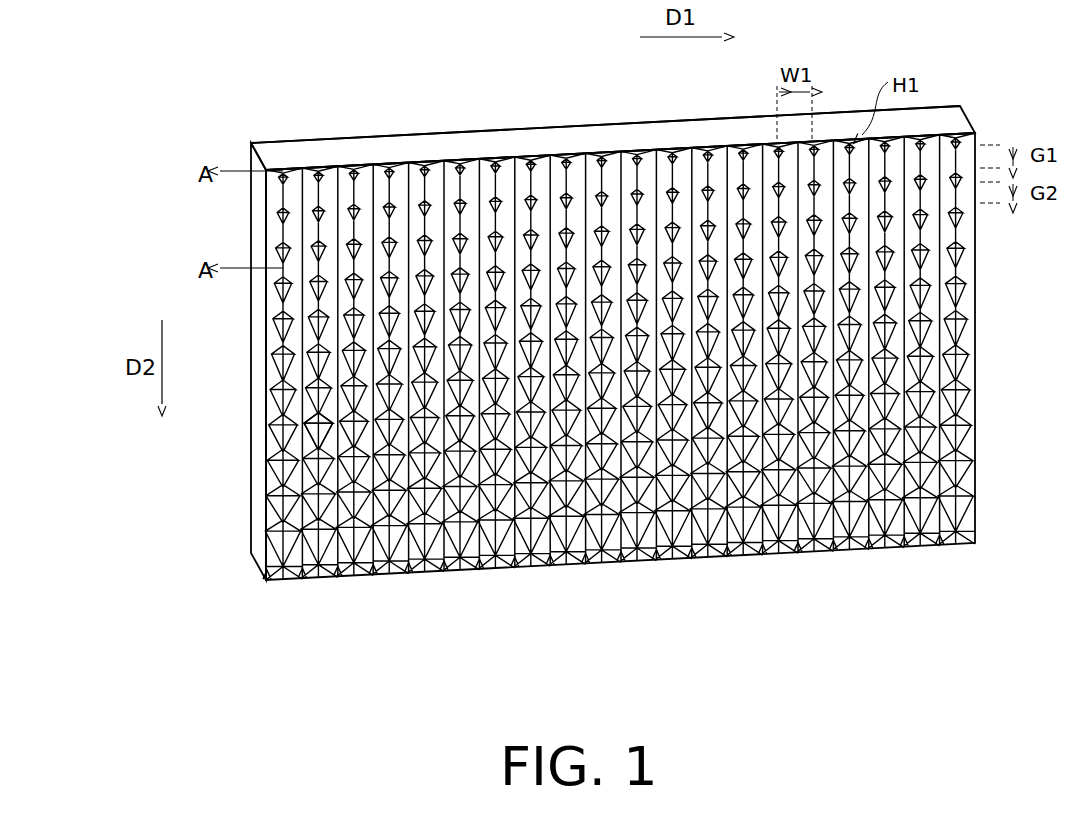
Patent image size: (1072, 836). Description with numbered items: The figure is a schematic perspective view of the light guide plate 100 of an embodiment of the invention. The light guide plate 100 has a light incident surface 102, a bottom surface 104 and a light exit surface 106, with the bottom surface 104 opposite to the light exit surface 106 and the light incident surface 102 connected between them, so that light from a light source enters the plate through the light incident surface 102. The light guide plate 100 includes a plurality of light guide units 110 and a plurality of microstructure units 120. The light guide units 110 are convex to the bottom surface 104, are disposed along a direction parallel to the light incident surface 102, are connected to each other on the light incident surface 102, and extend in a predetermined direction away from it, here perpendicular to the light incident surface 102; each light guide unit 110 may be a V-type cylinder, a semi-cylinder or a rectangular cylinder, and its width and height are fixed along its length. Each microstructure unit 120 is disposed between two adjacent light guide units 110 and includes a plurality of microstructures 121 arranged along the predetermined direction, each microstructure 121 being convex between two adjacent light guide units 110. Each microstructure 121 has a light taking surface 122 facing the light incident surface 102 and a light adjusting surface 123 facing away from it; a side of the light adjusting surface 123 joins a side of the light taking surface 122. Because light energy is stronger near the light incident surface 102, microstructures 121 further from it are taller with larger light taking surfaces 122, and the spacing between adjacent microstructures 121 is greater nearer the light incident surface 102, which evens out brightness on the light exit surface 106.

The light guide plate 100 is at (72, 96).
The light incident surface 102 is at (328, 150).
The bottom surface 104 is at (512, 153).
The light exit surface 106 is at (433, 130).
The light guide unit 110 is at (552, 183).
The microstructure unit 120 is at (360, 164).
The microstructure 121 is at (285, 541).
The light taking surface 122 is at (322, 432).
The light adjusting surface 123 is at (327, 432).